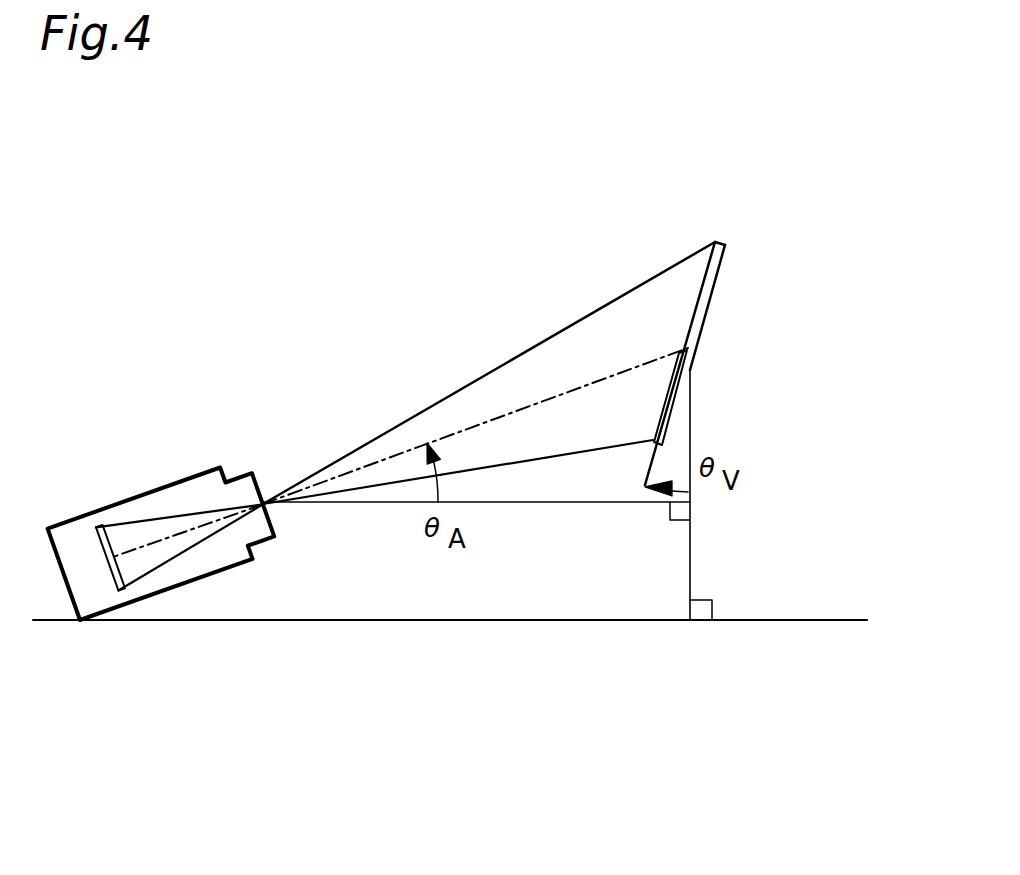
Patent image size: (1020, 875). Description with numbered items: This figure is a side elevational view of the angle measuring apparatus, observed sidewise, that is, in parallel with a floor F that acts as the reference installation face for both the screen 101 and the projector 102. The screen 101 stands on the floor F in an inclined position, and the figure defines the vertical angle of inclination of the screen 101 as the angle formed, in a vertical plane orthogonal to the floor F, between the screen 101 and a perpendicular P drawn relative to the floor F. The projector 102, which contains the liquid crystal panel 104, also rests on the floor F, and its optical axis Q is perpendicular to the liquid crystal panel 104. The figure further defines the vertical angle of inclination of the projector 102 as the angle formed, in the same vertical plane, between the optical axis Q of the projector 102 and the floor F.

The screen 101 is at (717, 283).
The projector 102 is at (198, 497).
The liquid crystal panel 104 is at (98, 518).
The optical axis Q is at (628, 368).
The perpendicular P is at (690, 528).
The floor F is at (830, 620).